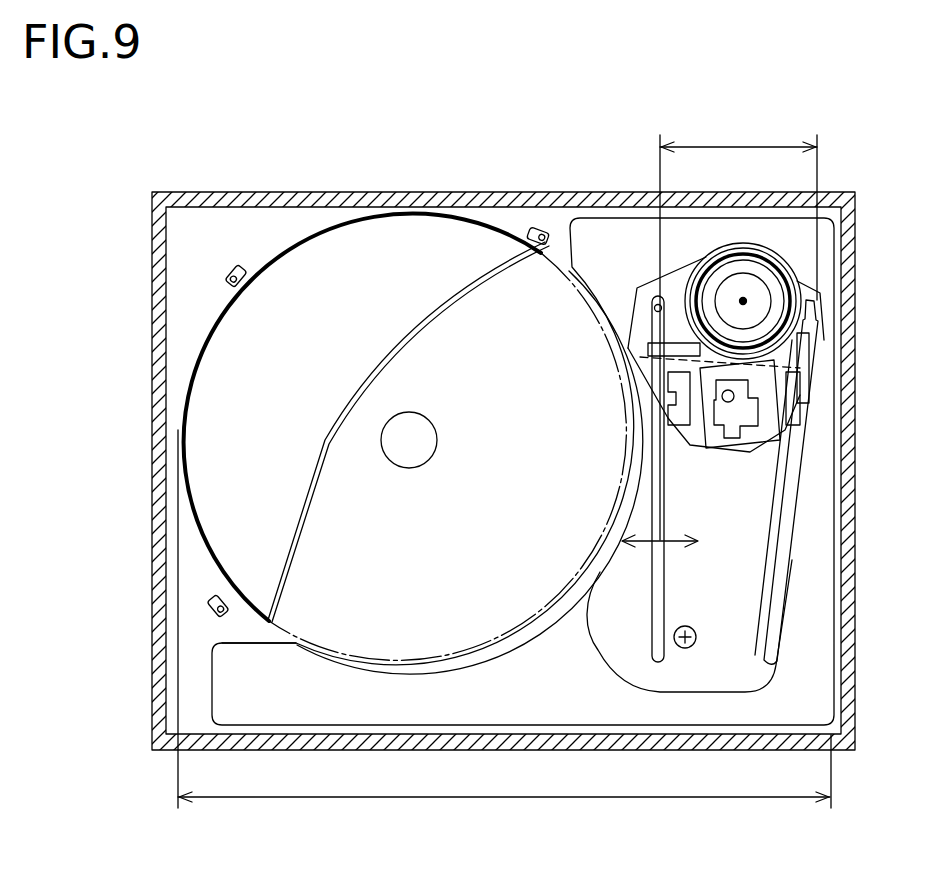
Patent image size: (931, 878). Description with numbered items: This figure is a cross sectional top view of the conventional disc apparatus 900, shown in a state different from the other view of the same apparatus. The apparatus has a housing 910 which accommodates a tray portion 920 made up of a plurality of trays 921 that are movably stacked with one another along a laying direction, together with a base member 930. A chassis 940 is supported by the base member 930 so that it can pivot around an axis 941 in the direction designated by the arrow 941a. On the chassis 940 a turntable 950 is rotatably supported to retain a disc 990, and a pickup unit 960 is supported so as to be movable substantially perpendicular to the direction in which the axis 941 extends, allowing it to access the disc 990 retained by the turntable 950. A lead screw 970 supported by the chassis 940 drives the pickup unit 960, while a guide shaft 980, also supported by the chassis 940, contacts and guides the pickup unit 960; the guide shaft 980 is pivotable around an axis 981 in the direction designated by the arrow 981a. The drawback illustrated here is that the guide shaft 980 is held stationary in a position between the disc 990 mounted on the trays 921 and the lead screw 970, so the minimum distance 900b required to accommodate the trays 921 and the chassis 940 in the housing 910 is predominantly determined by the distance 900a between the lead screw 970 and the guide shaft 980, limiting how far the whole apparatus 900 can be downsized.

The conventional disc apparatus 900 is at (493, 95).
The distance between lead screw and guide shaft 900a is at (737, 147).
The minimum distance 900b is at (517, 798).
The housing 910 is at (492, 196).
The tray portion 920 is at (192, 322).
The tray 921 is at (205, 425).
The base member 930 is at (601, 220).
The chassis 940 is at (627, 332).
The axis 941 is at (664, 690).
The arrow 941a is at (747, 596).
The turntable 950 is at (772, 285).
The pickup unit 960 is at (738, 422).
The lead screw 970 is at (758, 630).
The guide shaft 980 is at (652, 625).
The axis 981 is at (654, 306).
The arrow 981a is at (662, 540).
The disc 990 is at (340, 660).